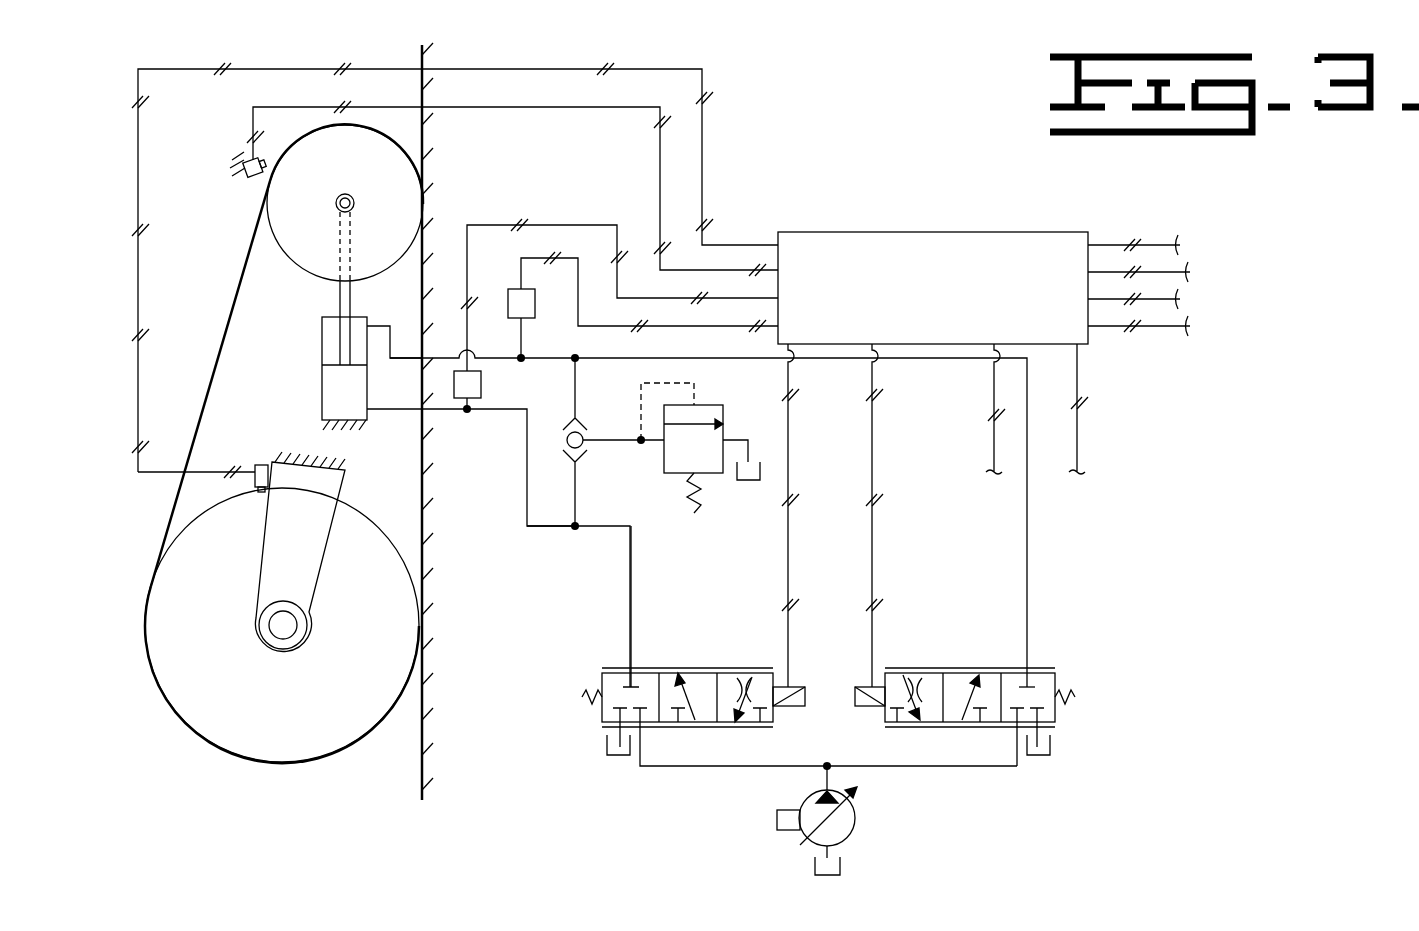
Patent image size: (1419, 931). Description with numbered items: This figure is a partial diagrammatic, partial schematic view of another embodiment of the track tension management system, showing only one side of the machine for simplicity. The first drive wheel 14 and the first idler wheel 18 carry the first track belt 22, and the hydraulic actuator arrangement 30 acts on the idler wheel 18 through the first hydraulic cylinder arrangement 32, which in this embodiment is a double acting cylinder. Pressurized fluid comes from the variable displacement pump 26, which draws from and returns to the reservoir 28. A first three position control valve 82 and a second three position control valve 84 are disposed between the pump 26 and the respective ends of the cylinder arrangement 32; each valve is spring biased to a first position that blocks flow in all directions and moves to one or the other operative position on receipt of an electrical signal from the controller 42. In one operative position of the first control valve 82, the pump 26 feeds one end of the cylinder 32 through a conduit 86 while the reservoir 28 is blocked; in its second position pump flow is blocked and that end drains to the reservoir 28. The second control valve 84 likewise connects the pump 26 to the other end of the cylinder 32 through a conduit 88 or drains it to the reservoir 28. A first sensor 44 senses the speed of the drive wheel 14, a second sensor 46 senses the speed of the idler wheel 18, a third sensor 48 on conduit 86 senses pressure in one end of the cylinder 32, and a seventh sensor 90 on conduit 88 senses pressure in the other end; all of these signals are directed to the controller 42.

The first drive wheel 14 is at (269, 717).
The first idler wheel 18 is at (331, 177).
The first track belt 22 is at (233, 295).
The variable displacement pump 26 is at (856, 818).
The reservoir 28 is at (840, 864).
The hydraulic actuator arrangement 30 is at (178, 363).
The first hydraulic cylinder arrangement 32 is at (322, 381).
The controller 42 is at (919, 265).
The first sensor 44 is at (253, 458).
The second sensor 46 is at (244, 182).
The third sensor 48 is at (482, 384).
The first three position control valve 82 is at (712, 668).
The second three position control valve 84 is at (990, 668).
The conduit 86 is at (553, 530).
The conduit 88 is at (705, 358).
The seventh sensor 90 is at (535, 305).